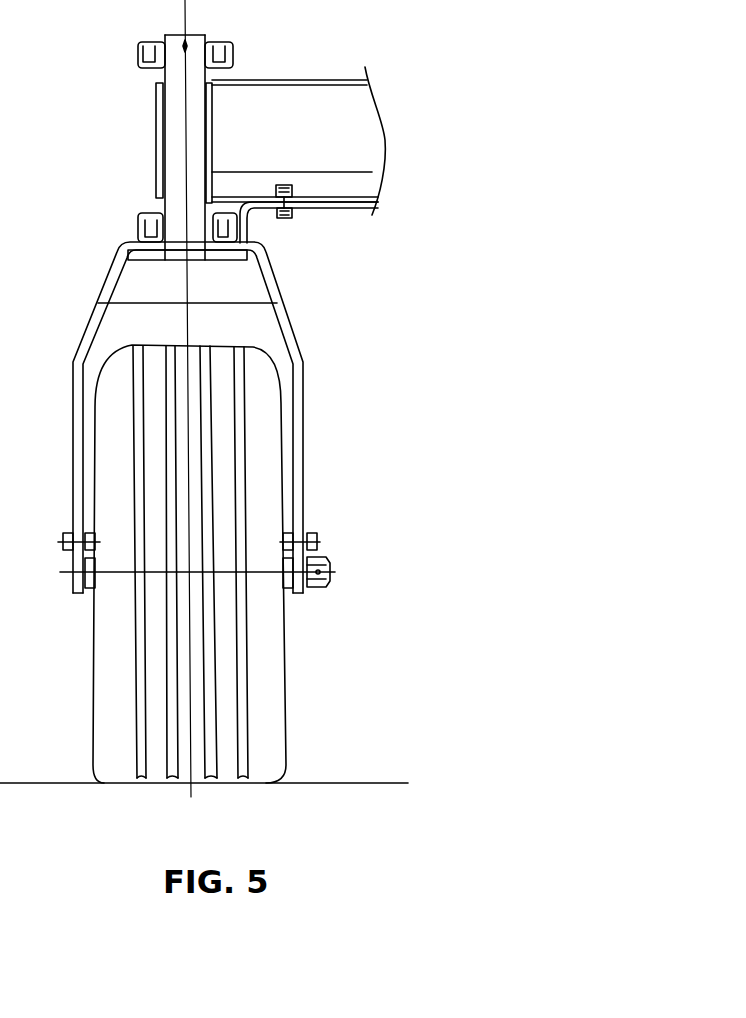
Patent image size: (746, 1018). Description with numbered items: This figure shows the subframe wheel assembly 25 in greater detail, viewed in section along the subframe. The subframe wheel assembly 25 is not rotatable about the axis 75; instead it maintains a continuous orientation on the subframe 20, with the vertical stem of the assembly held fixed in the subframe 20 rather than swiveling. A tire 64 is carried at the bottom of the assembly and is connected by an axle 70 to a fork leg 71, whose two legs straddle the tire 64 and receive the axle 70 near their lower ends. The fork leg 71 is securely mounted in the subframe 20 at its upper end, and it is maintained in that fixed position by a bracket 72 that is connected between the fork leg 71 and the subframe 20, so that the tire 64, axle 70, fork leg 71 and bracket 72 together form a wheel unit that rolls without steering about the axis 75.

The subframe 20 is at (280, 82).
The subframe wheel assembly 25 is at (400, 240).
The tire 64 is at (288, 767).
The axle 70 is at (287, 592).
The fork leg 71 is at (303, 467).
The bracket 72 is at (247, 228).
The axis 75 is at (189, 329).